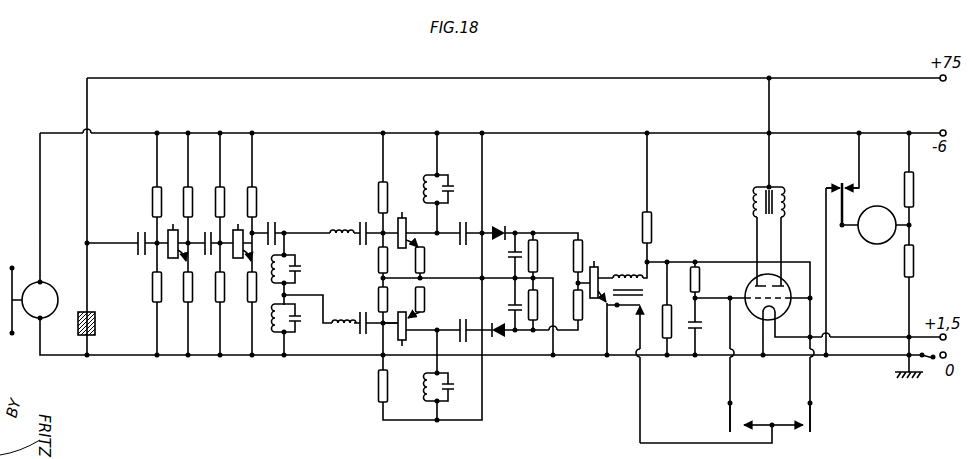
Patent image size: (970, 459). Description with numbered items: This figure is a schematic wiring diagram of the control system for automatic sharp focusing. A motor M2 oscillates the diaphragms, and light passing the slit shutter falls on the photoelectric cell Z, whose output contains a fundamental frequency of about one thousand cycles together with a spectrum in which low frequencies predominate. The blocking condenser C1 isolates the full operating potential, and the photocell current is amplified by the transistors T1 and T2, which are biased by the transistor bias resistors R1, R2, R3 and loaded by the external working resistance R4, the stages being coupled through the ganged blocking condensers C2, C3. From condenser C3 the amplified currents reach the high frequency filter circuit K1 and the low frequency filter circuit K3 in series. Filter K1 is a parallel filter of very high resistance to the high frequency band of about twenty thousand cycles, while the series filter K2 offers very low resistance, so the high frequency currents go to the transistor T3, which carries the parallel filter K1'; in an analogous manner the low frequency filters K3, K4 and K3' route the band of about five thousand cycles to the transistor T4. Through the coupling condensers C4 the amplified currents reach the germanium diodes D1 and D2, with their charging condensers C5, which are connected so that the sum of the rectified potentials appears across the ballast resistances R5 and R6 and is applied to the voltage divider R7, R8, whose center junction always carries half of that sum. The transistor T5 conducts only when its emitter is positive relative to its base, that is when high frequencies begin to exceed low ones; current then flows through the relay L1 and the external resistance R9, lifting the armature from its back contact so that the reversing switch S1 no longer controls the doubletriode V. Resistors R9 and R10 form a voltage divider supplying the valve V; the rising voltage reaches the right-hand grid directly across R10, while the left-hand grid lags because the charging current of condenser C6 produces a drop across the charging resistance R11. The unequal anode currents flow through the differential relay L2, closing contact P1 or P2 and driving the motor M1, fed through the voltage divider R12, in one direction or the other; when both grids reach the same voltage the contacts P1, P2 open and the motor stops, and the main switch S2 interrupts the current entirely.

The motor for oscillating the diaphragms M2 is at (40, 300).
The photo electric cell Z is at (77, 328).
The blocking condenser for the full operating potential C1 is at (137, 250).
The ganged blocking condenser C2 is at (205, 256).
The ganged blocking condenser C3 is at (282, 219).
The coupling condenser for the rectifiers C4 is at (461, 326).
The charging condenser for the diodes C5 is at (507, 307).
The charging condenser of the time element C6 is at (700, 325).
The transistor T1 is at (174, 234).
The transistor T2 is at (239, 234).
The transistor T3 is at (407, 222).
The transistor T4 is at (404, 332).
The transistor T5 is at (604, 275).
The transistor bias resistor R1 is at (378, 292).
The transistor bias resistor R2 is at (378, 392).
The transistor bias resistor R3 is at (248, 298).
The external working resistance R4 is at (247, 197).
The ballast resistance for the diodes R5 is at (538, 248).
The ballast resistance for the diodes R6 is at (538, 300).
The voltage divider R7 is at (583, 248).
The voltage divider R8 is at (583, 316).
The external resistance for T5 R9 is at (652, 220).
The voltage divider resistance R10 is at (672, 322).
The charging resistance for C6 R11 is at (700, 276).
The voltage divider for motor M1 R12 is at (919, 280).
The high frequency filter circuit K1 is at (296, 264).
The high frequency filter circuit K2 is at (340, 229).
The low frequency filter circuit K3 is at (297, 328).
The low frequency filter circuit K4 is at (343, 331).
The high frequency filter circuit K1' is at (447, 177).
The low frequency filter circuit K3' is at (451, 395).
The germanium diode D1 is at (497, 227).
The germanium diode D2 is at (499, 337).
The relay with back contact L1 is at (624, 278).
The differential relay L2 is at (751, 205).
The doubletriode V is at (786, 299).
The contact of relay L2 P1 is at (833, 187).
The contact of relay L2 P2 is at (849, 193).
The motor for moving the system of lenses M1 is at (877, 225).
The reversing switch S1 is at (775, 421).
The main switch S2 is at (932, 375).